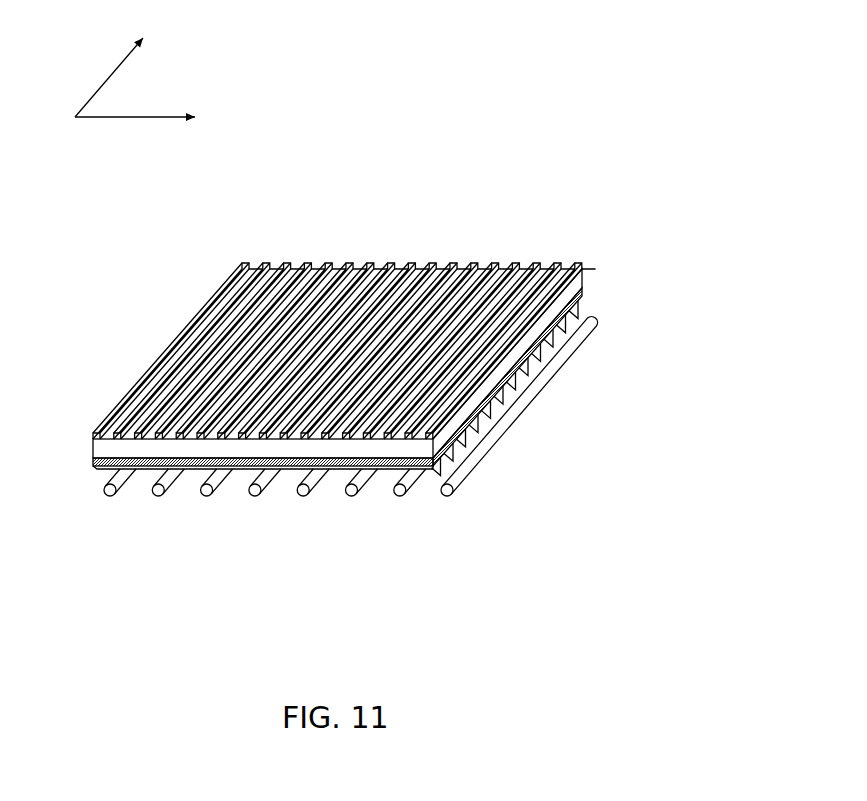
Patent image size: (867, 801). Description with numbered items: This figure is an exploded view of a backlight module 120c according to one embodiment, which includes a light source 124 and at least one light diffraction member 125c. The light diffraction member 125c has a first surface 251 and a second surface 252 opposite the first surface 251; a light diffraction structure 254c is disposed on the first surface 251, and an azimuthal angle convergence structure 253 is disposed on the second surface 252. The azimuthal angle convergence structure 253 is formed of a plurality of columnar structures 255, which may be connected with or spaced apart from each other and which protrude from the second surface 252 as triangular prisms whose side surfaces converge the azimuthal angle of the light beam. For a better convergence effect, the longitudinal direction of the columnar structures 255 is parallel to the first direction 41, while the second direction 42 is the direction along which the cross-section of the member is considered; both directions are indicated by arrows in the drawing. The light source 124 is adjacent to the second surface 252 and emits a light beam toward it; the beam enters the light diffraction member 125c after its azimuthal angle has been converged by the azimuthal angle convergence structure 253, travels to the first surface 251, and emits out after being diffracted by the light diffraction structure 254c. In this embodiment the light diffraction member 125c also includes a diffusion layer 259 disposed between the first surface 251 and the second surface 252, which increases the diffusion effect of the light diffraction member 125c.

The first direction 41 is at (155, 119).
The second direction 42 is at (124, 67).
The backlight module 120c is at (721, 52).
The light source 124 is at (460, 483).
The light diffraction member 125c is at (542, 326).
The first surface 251 is at (583, 273).
The second surface 252 is at (583, 297).
The azimuthal angle convergence structure 253 is at (530, 368).
The light diffraction structure 254c is at (550, 262).
The columnar structures 255 is at (508, 411).
The diffusion layer 259 is at (327, 464).